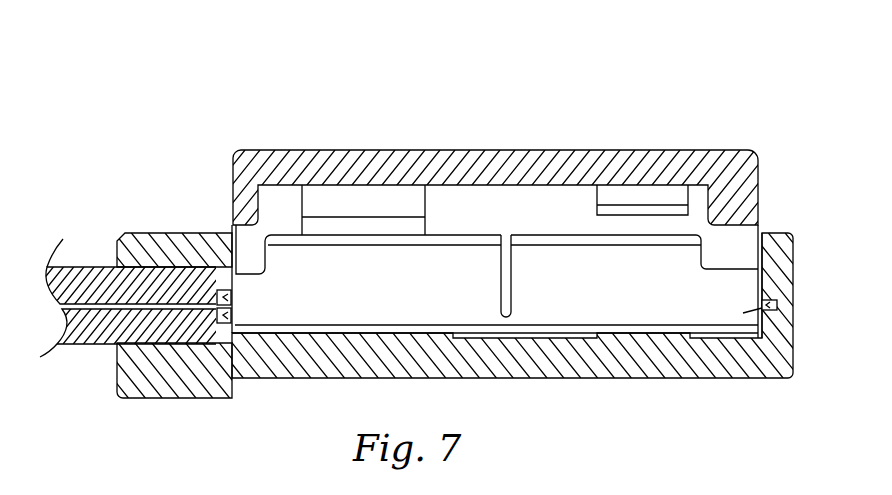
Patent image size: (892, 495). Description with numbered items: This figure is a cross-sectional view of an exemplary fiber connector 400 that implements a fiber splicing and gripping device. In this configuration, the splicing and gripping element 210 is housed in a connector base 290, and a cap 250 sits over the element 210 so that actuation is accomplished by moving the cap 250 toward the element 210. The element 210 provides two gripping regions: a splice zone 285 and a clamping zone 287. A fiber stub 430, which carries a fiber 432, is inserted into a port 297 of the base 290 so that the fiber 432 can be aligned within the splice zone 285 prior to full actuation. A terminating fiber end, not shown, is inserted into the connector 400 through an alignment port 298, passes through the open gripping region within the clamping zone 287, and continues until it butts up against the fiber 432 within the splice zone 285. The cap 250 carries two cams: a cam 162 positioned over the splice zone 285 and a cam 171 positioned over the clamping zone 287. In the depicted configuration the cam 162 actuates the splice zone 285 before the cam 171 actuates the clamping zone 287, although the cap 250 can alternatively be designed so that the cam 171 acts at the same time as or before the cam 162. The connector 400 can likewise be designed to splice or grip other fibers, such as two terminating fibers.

The fiber connector 400 is at (565, 122).
The cap 250 is at (510, 165).
The cam 162 is at (363, 206).
The cam 171 is at (648, 188).
The splice zone 285 is at (375, 297).
The clamping zone 287 is at (640, 297).
The alignment port 298 is at (781, 305).
The element 210 is at (762, 315).
The connector base 290 is at (528, 378).
The port 297 is at (162, 347).
The fiber stub 430 is at (90, 267).
The fiber 432 is at (103, 312).